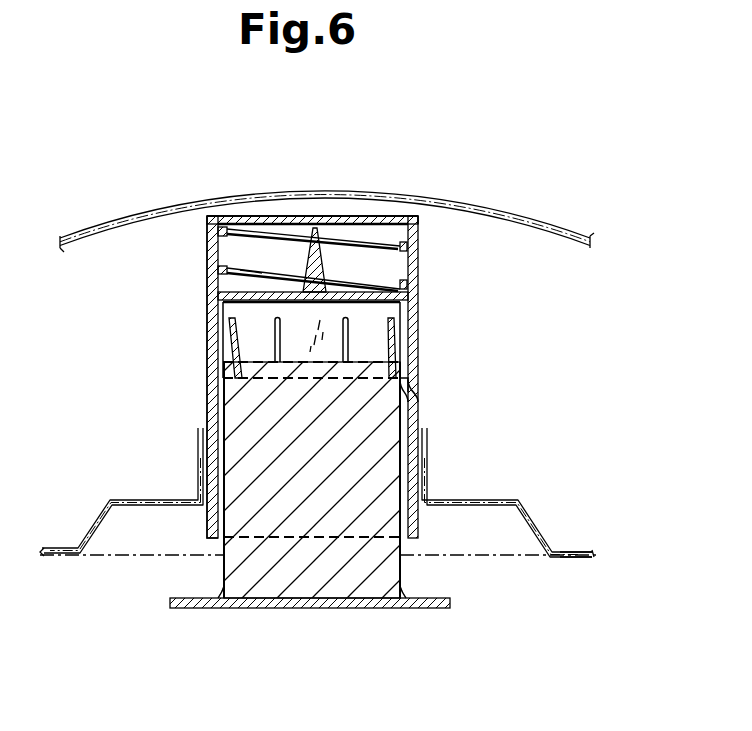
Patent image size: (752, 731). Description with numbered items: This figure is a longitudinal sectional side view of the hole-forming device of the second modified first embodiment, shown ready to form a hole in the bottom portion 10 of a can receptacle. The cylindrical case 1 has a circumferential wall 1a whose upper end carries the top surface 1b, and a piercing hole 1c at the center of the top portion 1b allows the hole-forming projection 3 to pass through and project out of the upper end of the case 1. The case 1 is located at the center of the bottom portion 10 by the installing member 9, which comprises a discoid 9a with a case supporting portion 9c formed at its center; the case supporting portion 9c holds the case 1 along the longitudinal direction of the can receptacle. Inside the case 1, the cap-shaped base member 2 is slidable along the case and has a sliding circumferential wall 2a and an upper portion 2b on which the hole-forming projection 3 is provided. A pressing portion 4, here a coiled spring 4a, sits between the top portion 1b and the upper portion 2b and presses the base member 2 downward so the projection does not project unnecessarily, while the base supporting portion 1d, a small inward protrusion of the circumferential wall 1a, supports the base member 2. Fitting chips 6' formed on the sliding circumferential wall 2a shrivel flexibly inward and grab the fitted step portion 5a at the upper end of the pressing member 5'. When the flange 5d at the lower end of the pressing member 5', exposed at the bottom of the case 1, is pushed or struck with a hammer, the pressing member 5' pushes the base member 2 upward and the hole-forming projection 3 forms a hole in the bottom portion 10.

The case 1 is at (199, 330).
The circumferential wall 1a is at (207, 402).
The top surface 1b is at (280, 291).
The piercing hole 1c is at (332, 216).
The base supporting portion 1d is at (418, 403).
The base member 2 is at (252, 262).
The sliding circumferential wall 2a is at (212, 306).
The upper portion 2b is at (258, 284).
The hole-forming projection 3 is at (300, 228).
The pressing portion 4 is at (465, 270).
The coiled spring 4a is at (391, 254).
The pressing member 5' is at (255, 485).
The fitted step portion 5a is at (410, 380).
The flange 5d is at (450, 603).
The fitting chip 6' is at (318, 340).
The installing member 9 is at (528, 502).
The discoid 9a is at (560, 552).
The case supporting portion 9c is at (198, 435).
The bottom portion 10 is at (453, 198).